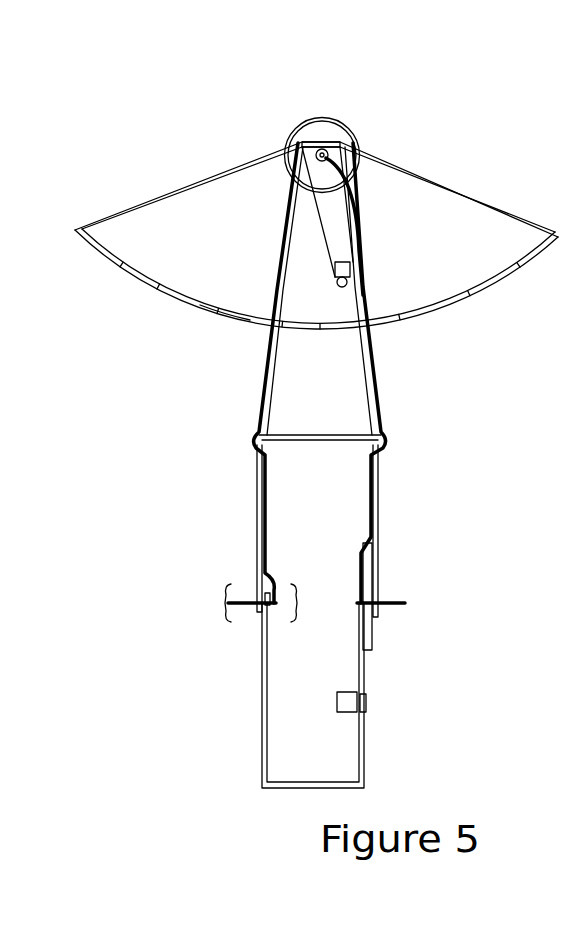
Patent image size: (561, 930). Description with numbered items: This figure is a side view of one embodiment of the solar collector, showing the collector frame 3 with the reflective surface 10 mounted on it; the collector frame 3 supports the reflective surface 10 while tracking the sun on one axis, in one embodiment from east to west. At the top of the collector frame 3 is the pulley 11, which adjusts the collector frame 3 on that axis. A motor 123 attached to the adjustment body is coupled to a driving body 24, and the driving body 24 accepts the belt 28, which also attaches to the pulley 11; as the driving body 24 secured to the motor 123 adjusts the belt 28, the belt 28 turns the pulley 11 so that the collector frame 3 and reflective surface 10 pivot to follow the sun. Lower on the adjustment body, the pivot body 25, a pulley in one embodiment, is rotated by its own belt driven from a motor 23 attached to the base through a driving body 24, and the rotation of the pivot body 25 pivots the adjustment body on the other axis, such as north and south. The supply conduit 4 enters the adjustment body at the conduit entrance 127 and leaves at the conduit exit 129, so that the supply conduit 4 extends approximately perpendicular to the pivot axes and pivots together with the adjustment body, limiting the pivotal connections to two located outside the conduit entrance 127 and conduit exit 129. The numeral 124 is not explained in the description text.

The collector frame 3 is at (490, 198).
The pulley 11 is at (345, 122).
The reflective surface 10 is at (218, 312).
The belt 28 is at (308, 238).
The motor 123 is at (357, 256).
The cable 124 is at (360, 283).
The supply conduit 4 is at (383, 418).
The conduit entrance 127 is at (387, 600).
The conduit exit 129 is at (258, 617).
The pivot body 25 is at (367, 648).
The motor 23 is at (346, 712).
The driving body 24 is at (368, 715).